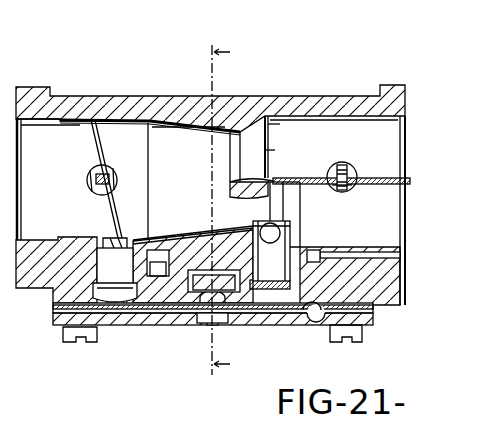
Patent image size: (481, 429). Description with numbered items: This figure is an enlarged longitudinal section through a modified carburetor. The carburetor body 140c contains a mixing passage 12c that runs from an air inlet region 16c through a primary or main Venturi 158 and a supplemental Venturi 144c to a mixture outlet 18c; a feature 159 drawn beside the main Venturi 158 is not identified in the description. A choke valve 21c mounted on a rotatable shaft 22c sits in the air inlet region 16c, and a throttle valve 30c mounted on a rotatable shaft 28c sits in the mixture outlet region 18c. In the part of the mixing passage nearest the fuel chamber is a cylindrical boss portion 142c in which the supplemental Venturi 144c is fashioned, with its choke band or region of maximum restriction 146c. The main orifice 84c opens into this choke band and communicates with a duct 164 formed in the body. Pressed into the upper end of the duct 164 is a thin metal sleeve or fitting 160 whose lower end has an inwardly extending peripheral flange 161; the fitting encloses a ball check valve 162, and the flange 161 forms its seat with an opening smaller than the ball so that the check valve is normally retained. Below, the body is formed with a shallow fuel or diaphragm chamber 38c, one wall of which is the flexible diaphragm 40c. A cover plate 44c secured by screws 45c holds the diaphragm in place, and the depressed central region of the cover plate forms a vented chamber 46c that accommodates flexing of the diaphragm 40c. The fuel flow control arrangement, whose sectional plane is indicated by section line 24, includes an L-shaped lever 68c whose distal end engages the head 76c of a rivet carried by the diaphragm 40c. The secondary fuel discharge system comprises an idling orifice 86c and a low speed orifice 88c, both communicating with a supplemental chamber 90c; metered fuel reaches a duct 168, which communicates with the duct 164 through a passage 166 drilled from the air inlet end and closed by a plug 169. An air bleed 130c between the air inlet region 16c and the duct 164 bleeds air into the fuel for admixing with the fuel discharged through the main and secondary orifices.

The section line 24 is at (228, 213).
The carburetor body 140c is at (253, 95).
The primary or main Venturi 158 is at (273, 132).
The partition step 159 is at (268, 152).
The mixture outlet 18c is at (50, 151).
The throttle valve 30c is at (99, 139).
The mixing passage 12c is at (183, 156).
The air inlet region 16c is at (392, 135).
The rotatable shaft 28c is at (86, 178).
The cylindrical boss portion 142c is at (275, 180).
The choke valve 21c is at (357, 173).
The rotatable shaft 22c is at (355, 186).
The low speed orifice 88c is at (115, 233).
The idling orifice 86c is at (105, 238).
The main orifice 84c is at (253, 214).
The ball check valve 162 is at (263, 220).
The supplemental Venturi 144c is at (304, 204).
The choke band 146c is at (285, 212).
The sleeve or fitting 160 is at (284, 234).
The plug 169 is at (322, 253).
The supplemental chamber 90c is at (97, 264).
The peripheral flange 161 is at (271, 251).
The air bleed 130c is at (290, 256).
The fuel or diaphragm chamber 38c is at (52, 298).
The duct or passage 164 is at (256, 290).
The screws 45c is at (63, 337).
The flexible diaphragm 40c is at (115, 312).
The duct 168 is at (170, 292).
The passage 166 is at (205, 292).
The L-shaped lever 68c is at (215, 294).
The head 76c is at (230, 322).
The vented chamber 46c is at (305, 320).
The cover plate 44c is at (322, 325).